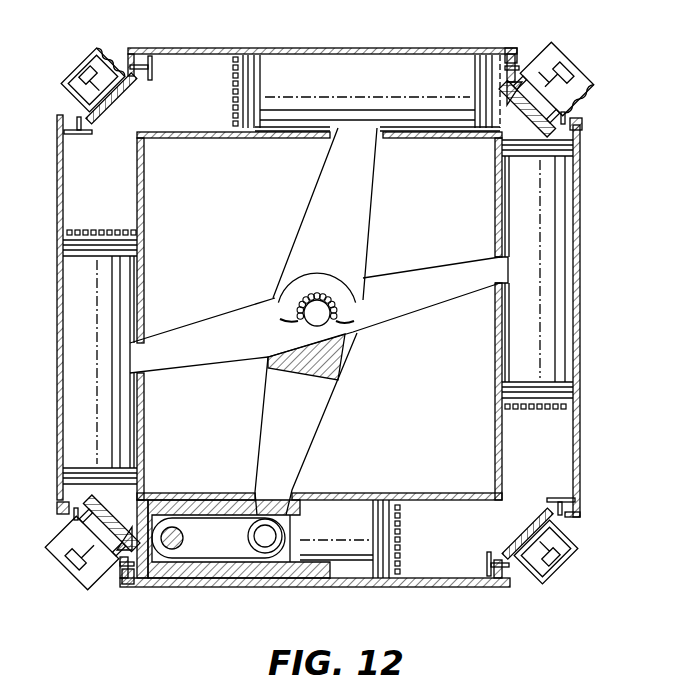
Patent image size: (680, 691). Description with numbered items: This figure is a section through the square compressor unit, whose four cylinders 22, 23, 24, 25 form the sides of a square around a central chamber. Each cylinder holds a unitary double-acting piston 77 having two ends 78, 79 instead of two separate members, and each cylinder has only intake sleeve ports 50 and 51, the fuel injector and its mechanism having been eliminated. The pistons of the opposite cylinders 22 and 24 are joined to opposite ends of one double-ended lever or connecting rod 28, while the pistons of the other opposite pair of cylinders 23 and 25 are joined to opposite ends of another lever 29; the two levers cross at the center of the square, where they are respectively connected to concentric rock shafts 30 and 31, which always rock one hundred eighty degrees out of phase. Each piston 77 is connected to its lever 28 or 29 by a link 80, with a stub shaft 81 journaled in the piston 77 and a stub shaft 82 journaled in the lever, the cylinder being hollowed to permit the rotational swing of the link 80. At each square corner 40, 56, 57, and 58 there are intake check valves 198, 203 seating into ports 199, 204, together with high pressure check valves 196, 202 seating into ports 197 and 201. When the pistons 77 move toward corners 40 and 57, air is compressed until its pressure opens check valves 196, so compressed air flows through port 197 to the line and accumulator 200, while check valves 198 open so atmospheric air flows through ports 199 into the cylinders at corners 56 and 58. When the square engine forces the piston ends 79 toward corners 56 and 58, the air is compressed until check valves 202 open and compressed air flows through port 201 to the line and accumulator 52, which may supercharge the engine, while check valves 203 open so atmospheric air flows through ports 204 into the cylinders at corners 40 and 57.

The cylinder 22 is at (330, 48).
The cylinder 23 is at (580, 320).
The cylinder 24 is at (310, 587).
The cylinder 25 is at (57, 337).
The lever or connecting rod 28 is at (438, 299).
The lever or connecting rod 29 is at (358, 211).
The rock shaft 30 is at (309, 322).
The rock shaft 31 is at (338, 288).
The square corner 40 is at (442, 194).
The intake sleeve port 50 is at (58, 233).
The intake sleeve port 51 is at (240, 48).
The line and accumulator 52 is at (86, 60).
The square corner 56 is at (397, 391).
The square corner 57 is at (196, 436).
The square corner 58 is at (233, 237).
The piston 77 is at (372, 60).
The piston end 78 is at (472, 79).
The piston end 79 is at (287, 79).
The link 80 is at (240, 551).
The stub shaft 81 is at (183, 538).
The stub shaft 82 is at (266, 522).
The high pressure check valve 196 is at (582, 95).
The port 197 is at (500, 114).
The intake check valve 198 is at (154, 68).
The port 199 is at (133, 60).
The line and accumulator 200 is at (598, 64).
The port 201 is at (118, 98).
The high pressure check valve 202 is at (108, 60).
The intake check valve 203 is at (530, 60).
The port 204 is at (520, 48).